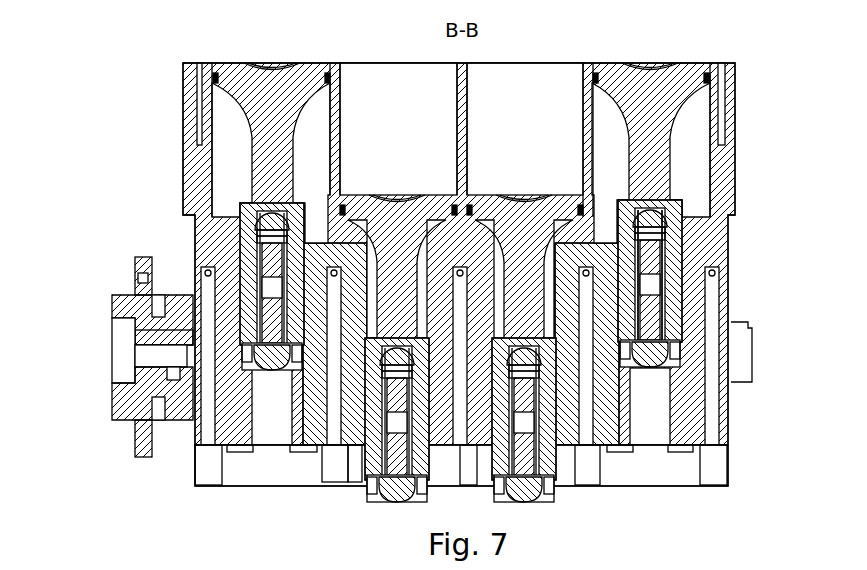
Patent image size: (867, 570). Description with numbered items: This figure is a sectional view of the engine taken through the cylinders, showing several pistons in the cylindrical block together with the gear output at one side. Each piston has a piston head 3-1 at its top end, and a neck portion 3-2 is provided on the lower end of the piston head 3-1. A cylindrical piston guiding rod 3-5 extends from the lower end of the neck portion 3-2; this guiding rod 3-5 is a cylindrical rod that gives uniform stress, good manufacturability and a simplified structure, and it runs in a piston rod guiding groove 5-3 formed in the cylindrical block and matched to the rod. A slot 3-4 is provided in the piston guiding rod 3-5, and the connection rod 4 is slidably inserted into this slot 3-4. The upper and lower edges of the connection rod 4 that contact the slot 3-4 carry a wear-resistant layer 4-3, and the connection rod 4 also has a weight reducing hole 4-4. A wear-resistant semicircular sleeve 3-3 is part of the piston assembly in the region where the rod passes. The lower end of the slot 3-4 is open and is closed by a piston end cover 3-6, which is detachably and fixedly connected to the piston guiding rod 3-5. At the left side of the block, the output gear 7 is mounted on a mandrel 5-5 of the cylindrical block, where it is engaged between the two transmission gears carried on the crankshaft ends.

The piston head 3-1 is at (688, 83).
The neck portion 3-2 is at (690, 107).
The wear-resistant semicircular sleeve 3-3 is at (680, 213).
The connection rod 4 is at (680, 245).
The slot 3-4 is at (668, 285).
The piston guiding rod 3-5 is at (685, 295).
The weight reducing hole 4-4 is at (652, 297).
The wear-resistant layer 4-3 is at (753, 380).
The piston end cover 3-6 is at (663, 372).
The piston rod guiding groove 5-3 is at (657, 408).
The output gear 7 is at (127, 295).
The mandrel 5-5 is at (165, 372).